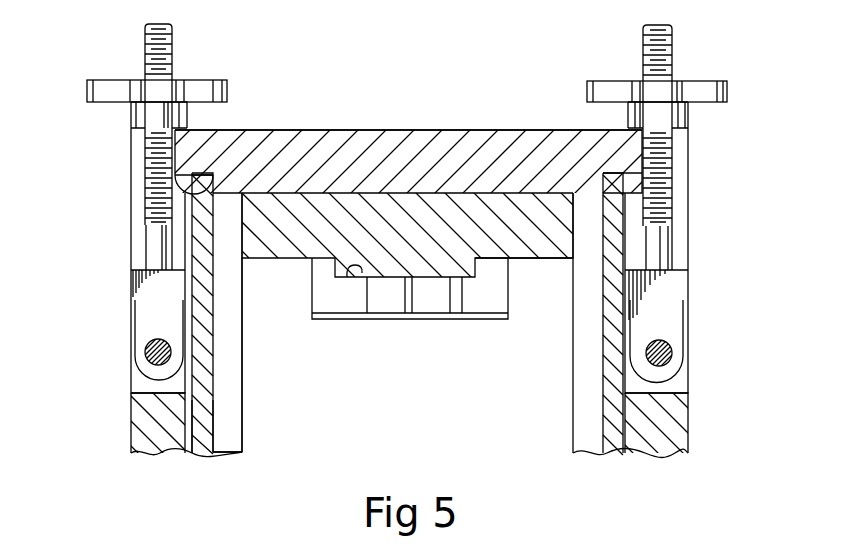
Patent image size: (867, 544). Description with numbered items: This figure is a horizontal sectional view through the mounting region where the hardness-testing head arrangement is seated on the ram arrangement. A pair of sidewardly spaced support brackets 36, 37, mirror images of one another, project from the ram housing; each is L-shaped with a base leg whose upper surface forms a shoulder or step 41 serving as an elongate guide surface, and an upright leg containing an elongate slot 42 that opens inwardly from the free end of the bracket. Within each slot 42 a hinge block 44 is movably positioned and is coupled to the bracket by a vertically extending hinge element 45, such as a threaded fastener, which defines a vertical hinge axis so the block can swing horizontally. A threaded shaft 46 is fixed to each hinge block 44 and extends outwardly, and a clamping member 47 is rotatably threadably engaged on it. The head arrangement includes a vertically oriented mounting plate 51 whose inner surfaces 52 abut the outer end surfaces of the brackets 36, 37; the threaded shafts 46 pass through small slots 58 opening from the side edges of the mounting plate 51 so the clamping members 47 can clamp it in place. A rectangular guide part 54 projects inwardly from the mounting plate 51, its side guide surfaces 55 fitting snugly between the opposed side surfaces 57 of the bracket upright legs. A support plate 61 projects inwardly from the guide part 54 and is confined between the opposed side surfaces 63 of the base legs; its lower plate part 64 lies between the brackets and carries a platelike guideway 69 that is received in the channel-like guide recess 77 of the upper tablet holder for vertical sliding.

The support bracket 36 is at (688, 410).
The support bracket 37 is at (130, 419).
The shoulder or step 41 is at (228, 345).
The elongate slot 42 is at (139, 390).
The hinge block 44 is at (152, 305).
The hinge element 45 is at (672, 348).
The threaded shaft 46 is at (158, 181).
The clamping member 47 is at (106, 76).
The mounting plate 51 is at (403, 128).
The inner surface 52 is at (191, 191).
The guide part 54 is at (318, 188).
The side guide surface 55 is at (212, 192).
The side surface 57 is at (213, 418).
The slot 58 is at (138, 147).
The support plate 61 is at (544, 262).
The side surface 63 is at (243, 387).
The lower plate part 64 is at (502, 218).
The platelike guideway 69 is at (462, 316).
The guide recess 77 is at (358, 270).